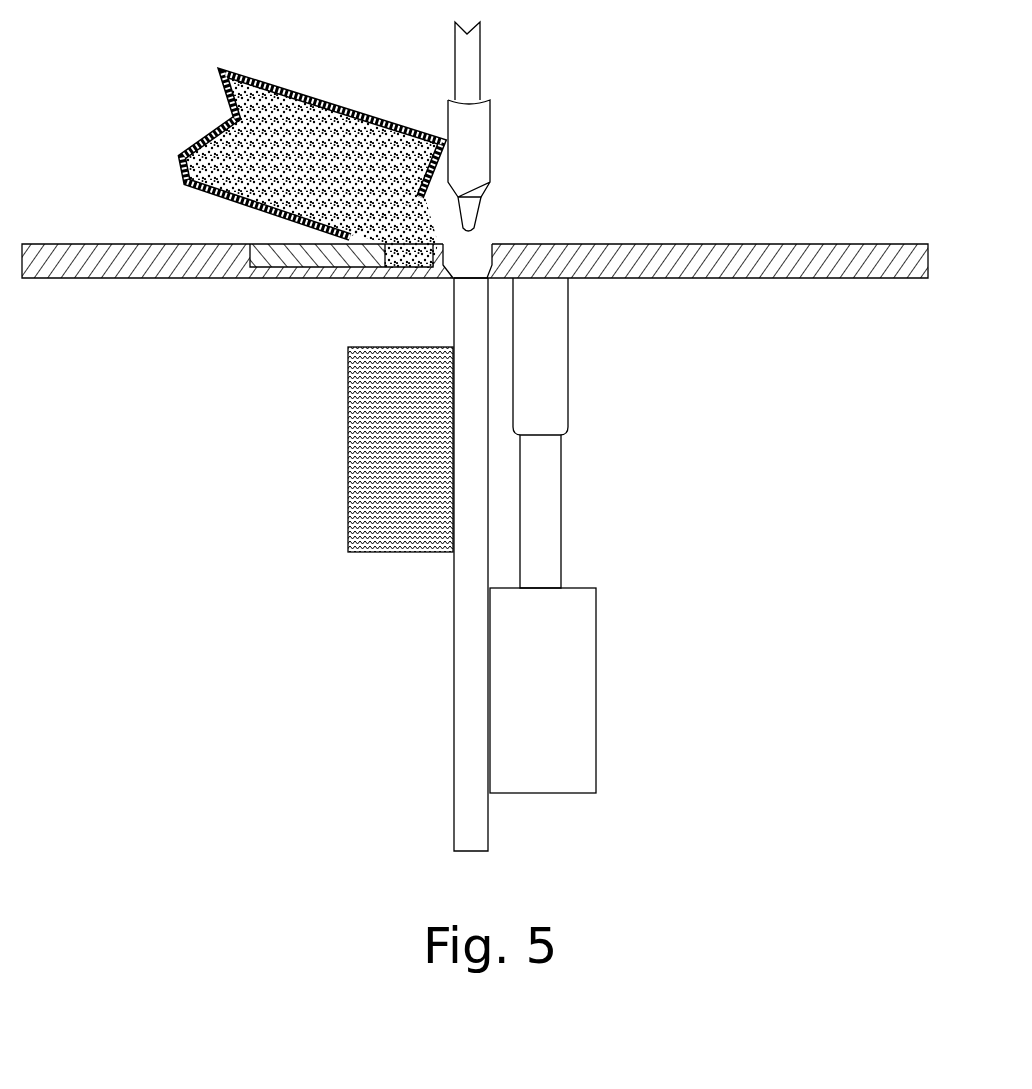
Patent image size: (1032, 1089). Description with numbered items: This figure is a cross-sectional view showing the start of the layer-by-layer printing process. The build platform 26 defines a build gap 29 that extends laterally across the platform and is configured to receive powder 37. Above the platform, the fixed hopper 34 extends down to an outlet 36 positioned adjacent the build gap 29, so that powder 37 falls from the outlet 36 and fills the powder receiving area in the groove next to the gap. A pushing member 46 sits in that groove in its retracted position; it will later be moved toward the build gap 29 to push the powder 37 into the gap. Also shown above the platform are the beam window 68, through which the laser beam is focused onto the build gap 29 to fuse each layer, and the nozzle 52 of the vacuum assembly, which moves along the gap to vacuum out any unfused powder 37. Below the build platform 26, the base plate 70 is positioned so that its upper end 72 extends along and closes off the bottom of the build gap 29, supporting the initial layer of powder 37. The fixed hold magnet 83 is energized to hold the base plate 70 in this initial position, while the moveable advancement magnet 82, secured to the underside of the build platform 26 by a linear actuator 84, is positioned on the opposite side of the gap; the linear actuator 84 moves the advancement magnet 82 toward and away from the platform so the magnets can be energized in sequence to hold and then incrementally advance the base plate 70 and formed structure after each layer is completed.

The build platform 26 is at (782, 243).
The build gap 29 is at (482, 248).
The hopper 34 is at (290, 92).
The outlet 36 is at (333, 278).
The powder 37 is at (400, 278).
The pushing member 46 is at (283, 270).
The nozzle 52 is at (480, 216).
The beam window 68 is at (478, 185).
The base plate 70 is at (468, 765).
The upper end 72 is at (482, 290).
The advancement magnet 82 is at (585, 673).
The hold magnet 83 is at (345, 495).
The linear actuator 84 is at (555, 388).